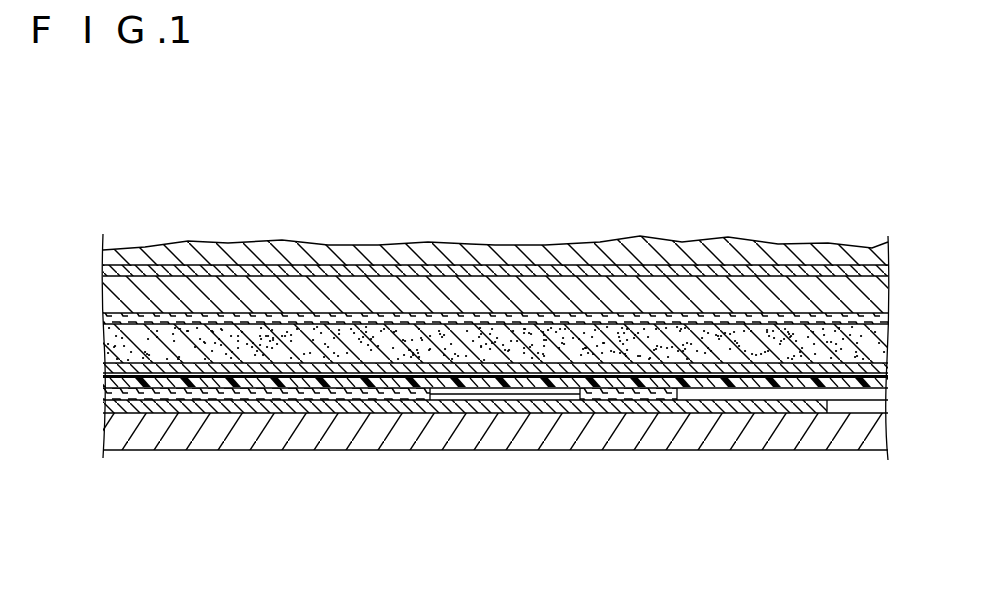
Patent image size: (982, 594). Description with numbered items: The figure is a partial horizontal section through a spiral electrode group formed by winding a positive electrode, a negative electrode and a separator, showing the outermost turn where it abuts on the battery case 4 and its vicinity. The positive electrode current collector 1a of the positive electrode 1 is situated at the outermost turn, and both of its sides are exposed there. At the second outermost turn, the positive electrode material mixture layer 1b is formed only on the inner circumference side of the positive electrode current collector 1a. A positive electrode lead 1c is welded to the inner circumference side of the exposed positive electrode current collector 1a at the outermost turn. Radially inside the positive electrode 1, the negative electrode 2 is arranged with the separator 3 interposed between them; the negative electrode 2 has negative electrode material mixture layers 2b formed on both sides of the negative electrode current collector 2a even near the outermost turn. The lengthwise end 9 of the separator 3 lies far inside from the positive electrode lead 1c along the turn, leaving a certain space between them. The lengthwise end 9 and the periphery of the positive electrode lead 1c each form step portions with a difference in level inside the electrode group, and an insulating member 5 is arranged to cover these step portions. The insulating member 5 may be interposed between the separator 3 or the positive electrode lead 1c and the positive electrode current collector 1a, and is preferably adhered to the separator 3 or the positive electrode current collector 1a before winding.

The positive electrode 1 is at (495, 443).
The positive electrode current collector 1a is at (773, 372).
The positive electrode material mixture layer 1b is at (577, 360).
The positive electrode lead 1c is at (645, 390).
The negative electrode 2 is at (495, 221).
The negative electrode current collector 2a is at (349, 270).
The negative electrode material mixture layers 2b is at (318, 178).
The separator 3 is at (277, 392).
The battery case 4 is at (190, 428).
The insulating member 5 is at (305, 392).
The lengthwise end 9 is at (436, 398).